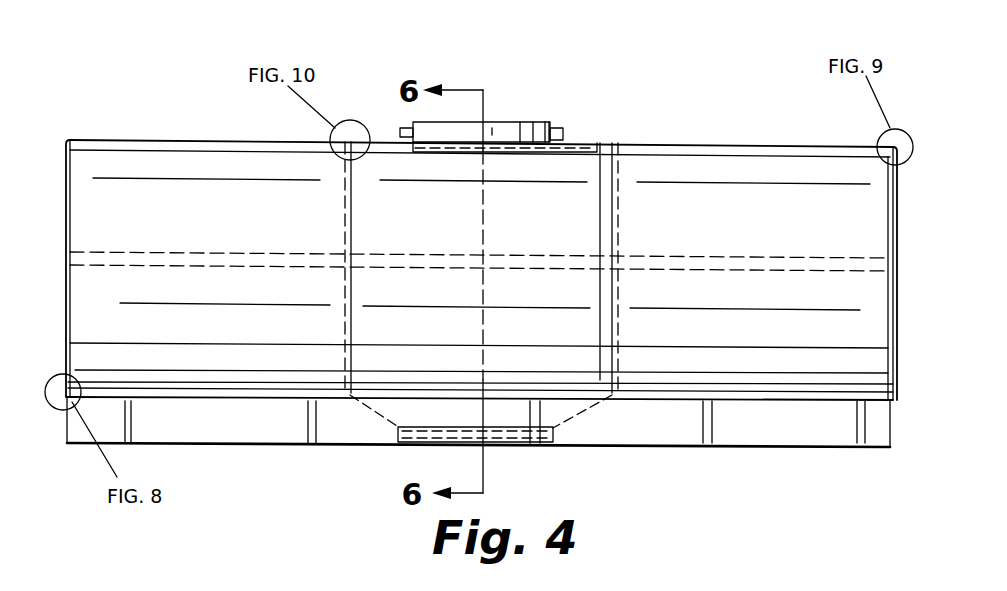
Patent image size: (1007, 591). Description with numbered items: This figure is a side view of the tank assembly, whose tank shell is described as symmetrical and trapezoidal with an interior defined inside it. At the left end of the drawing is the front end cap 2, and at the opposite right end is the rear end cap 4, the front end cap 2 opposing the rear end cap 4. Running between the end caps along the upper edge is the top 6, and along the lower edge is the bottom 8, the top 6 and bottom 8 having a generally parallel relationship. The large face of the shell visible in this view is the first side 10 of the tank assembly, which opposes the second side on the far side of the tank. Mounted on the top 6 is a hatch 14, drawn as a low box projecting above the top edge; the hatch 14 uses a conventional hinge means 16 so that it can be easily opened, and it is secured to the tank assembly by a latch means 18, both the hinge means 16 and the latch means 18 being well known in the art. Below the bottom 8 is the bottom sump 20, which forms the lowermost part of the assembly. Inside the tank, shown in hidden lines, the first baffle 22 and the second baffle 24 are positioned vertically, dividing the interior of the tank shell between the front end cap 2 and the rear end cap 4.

The front end cap 2 is at (66, 165).
The rear end cap 4 is at (893, 377).
The top 6 is at (130, 140).
The bottom 8 is at (630, 402).
The first side 10 is at (868, 213).
The hatch 14 is at (527, 122).
The hinge means 16 is at (560, 130).
The latch means 18 is at (402, 127).
The bottom sump 20 is at (753, 449).
The first baffle 22 is at (353, 205).
The second baffle 24 is at (612, 188).